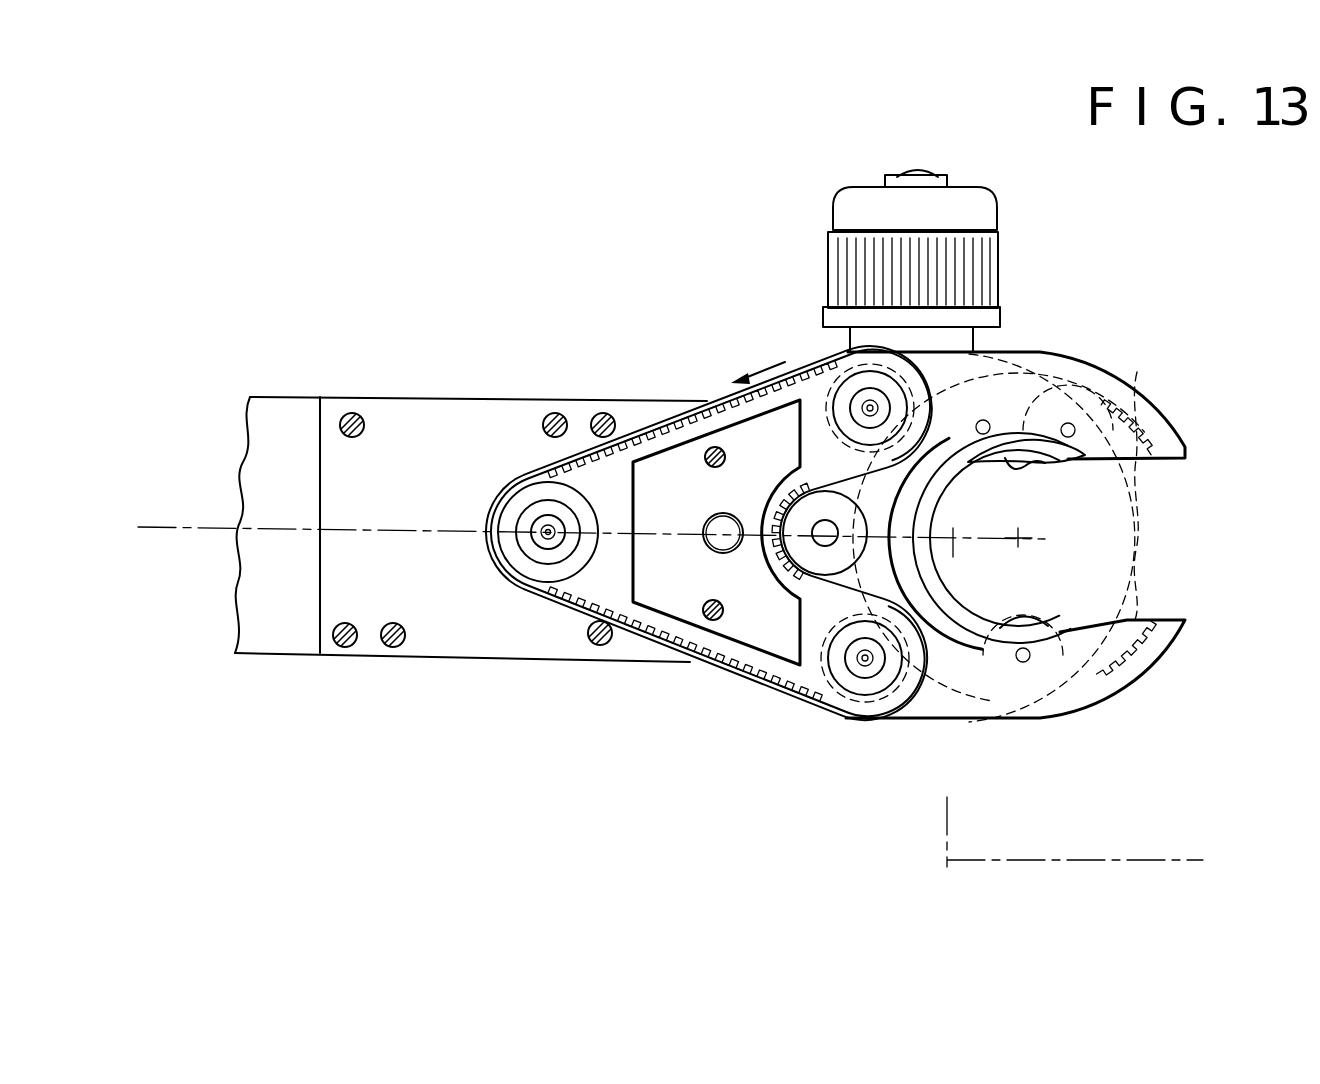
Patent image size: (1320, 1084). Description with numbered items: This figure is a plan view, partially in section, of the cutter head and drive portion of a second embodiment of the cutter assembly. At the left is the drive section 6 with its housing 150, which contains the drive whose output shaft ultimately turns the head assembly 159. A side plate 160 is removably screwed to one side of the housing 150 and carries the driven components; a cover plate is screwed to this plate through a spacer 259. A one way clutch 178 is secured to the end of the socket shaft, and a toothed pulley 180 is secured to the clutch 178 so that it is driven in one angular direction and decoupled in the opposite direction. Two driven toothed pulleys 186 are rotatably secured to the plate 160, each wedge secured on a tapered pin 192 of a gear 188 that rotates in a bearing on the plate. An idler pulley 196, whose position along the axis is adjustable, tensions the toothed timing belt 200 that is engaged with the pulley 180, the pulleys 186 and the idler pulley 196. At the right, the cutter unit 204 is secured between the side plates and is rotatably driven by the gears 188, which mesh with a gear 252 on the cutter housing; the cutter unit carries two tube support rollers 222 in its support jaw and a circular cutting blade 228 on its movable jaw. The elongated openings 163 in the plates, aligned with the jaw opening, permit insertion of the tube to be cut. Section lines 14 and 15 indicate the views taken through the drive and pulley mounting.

The drive section 6 is at (277, 397).
The section line 14- 14 is at (170, 540).
The section line 15- 15 is at (807, 407).
The housing 150 is at (288, 640).
The head assembly 159 is at (798, 760).
The side plate 160 is at (475, 417).
The elongated openings 163 is at (1121, 496).
The one way clutch 178 is at (518, 524).
The toothed pulley 180 is at (633, 500).
The driven toothed pulleys 186 is at (827, 363).
The gear 188 is at (987, 353).
The tapered pin 192 is at (865, 405).
The idler pulley 196 is at (818, 548).
The toothed timing belt 200 is at (680, 415).
The cutter unit 204 is at (1187, 520).
The tube support rollers 222 is at (1020, 455).
The circular cutting blade 228 is at (1027, 617).
The gear 252 is at (1135, 382).
The spacer 259 is at (685, 603).